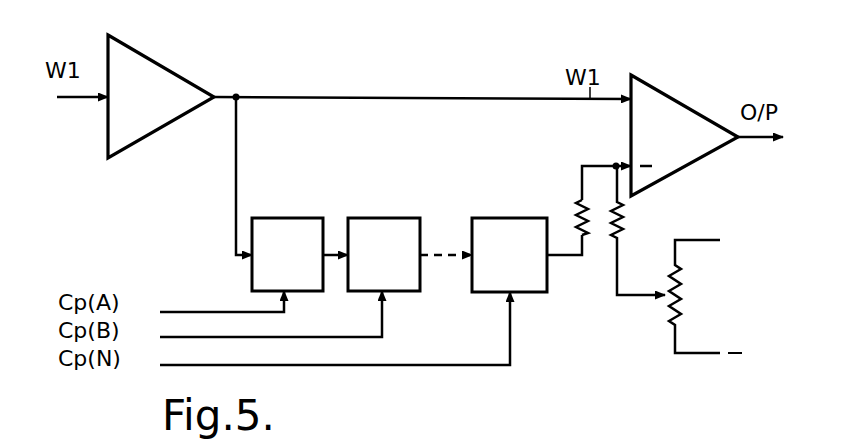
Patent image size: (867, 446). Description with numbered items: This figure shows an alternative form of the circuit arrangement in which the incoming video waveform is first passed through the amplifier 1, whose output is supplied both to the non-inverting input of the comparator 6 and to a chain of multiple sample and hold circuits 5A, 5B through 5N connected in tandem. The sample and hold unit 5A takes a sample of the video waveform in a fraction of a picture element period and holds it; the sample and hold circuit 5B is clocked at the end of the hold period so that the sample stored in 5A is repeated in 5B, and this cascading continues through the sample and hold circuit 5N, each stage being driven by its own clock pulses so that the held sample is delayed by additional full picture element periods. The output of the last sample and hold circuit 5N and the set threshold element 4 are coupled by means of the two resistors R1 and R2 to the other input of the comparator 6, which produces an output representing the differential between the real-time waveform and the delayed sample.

The amplifier 1 is at (161, 66).
The sample and hold unit 5A is at (279, 217).
The sample and hold circuit 5B is at (376, 217).
The sample and hold circuit 5N is at (492, 217).
The resistor R1 is at (577, 219).
The resistor R2 is at (638, 230).
The set threshold element 4 is at (688, 262).
The comparator 6 is at (683, 97).